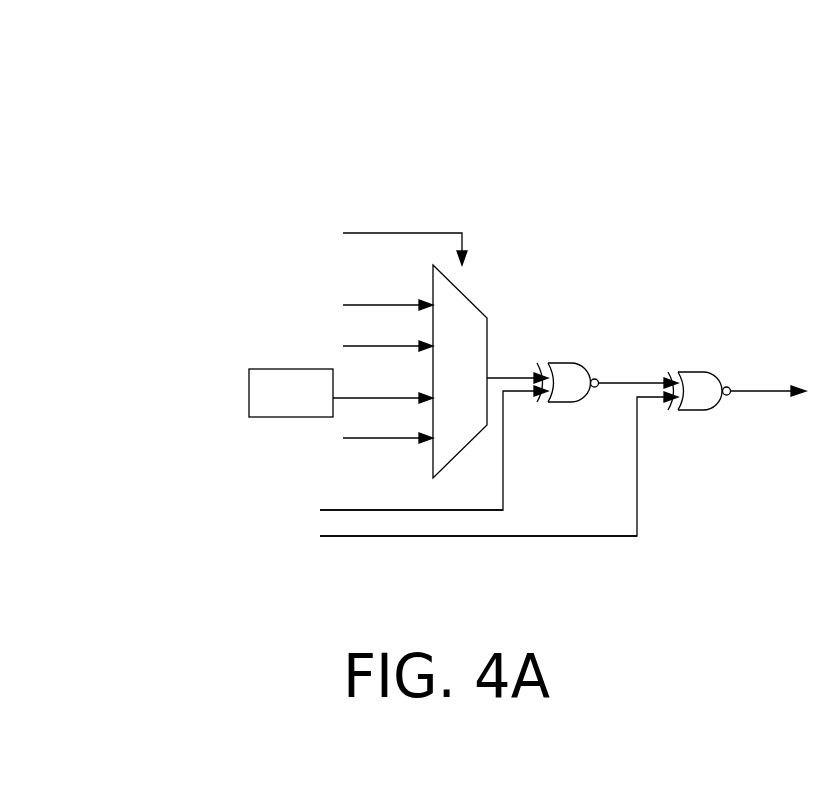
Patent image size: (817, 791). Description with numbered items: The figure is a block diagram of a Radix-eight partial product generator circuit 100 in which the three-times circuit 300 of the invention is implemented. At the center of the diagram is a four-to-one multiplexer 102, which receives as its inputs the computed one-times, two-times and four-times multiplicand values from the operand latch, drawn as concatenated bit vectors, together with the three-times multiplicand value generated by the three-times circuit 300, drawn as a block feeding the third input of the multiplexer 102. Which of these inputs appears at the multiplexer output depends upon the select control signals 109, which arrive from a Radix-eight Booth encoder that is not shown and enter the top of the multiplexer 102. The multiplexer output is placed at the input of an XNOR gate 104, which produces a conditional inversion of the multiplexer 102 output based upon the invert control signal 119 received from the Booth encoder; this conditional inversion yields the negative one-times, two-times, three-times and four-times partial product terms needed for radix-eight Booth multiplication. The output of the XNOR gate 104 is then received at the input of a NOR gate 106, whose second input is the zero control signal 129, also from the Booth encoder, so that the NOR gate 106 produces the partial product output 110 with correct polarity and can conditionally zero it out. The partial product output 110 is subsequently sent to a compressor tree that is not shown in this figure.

The partial product generator 100 is at (413, 85).
The 4:1 multiplexer 102 is at (478, 300).
The XNOR gate 104 is at (583, 363).
The NOR gate 106 is at (716, 372).
The select control signals 109 is at (437, 233).
The partial product output 110 is at (767, 391).
The invert control signal 119 is at (503, 509).
The zero control signal 129 is at (637, 535).
The 3× circuit 300 is at (249, 398).